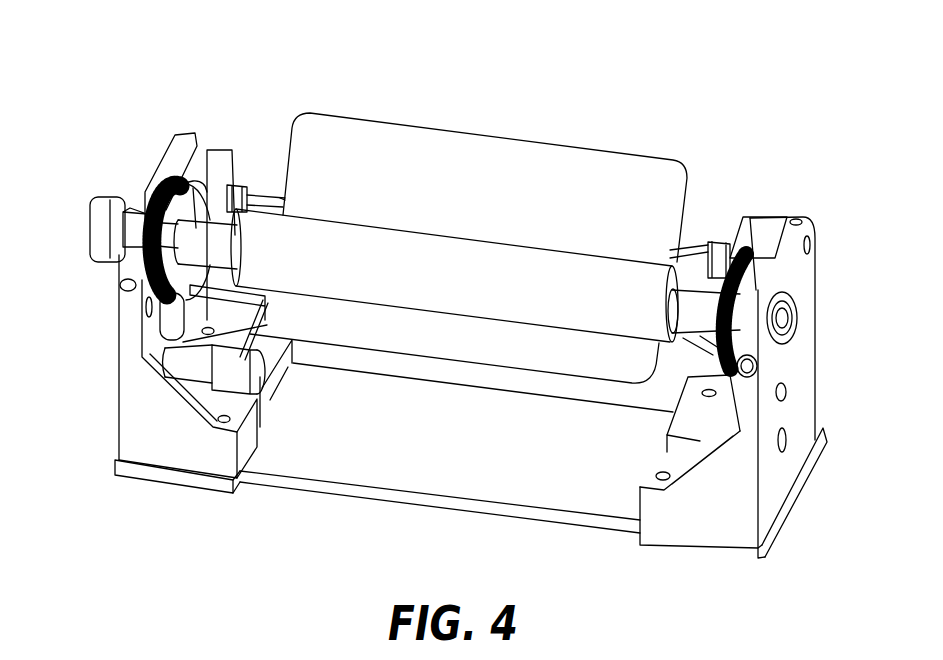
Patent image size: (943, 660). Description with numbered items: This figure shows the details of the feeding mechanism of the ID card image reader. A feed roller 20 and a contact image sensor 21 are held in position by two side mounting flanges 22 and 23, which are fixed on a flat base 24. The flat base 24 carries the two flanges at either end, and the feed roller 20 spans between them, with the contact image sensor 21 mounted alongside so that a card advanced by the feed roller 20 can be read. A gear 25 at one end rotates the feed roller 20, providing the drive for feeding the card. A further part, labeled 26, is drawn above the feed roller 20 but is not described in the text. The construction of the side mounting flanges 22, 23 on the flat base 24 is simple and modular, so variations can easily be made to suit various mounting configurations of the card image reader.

The feed roller 20 is at (487, 272).
The contact image sensor 21 is at (702, 213).
The side mounting flange 22 is at (708, 502).
The side mounting flange 23 is at (153, 443).
The flat base 24 is at (427, 483).
The gear 25 is at (108, 192).
The cover plate 26 is at (470, 134).